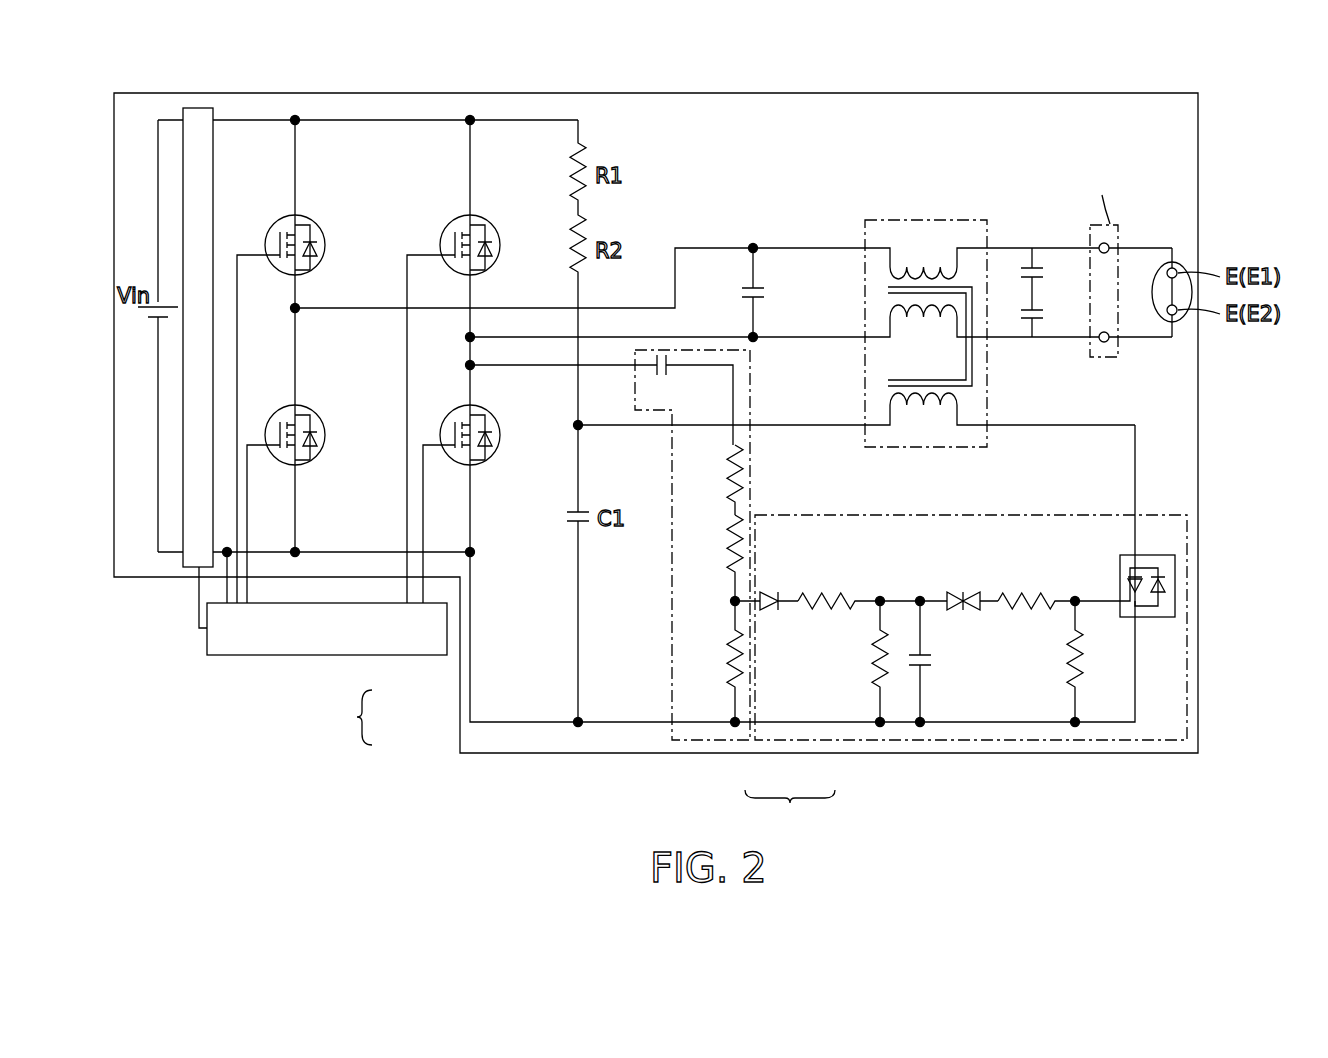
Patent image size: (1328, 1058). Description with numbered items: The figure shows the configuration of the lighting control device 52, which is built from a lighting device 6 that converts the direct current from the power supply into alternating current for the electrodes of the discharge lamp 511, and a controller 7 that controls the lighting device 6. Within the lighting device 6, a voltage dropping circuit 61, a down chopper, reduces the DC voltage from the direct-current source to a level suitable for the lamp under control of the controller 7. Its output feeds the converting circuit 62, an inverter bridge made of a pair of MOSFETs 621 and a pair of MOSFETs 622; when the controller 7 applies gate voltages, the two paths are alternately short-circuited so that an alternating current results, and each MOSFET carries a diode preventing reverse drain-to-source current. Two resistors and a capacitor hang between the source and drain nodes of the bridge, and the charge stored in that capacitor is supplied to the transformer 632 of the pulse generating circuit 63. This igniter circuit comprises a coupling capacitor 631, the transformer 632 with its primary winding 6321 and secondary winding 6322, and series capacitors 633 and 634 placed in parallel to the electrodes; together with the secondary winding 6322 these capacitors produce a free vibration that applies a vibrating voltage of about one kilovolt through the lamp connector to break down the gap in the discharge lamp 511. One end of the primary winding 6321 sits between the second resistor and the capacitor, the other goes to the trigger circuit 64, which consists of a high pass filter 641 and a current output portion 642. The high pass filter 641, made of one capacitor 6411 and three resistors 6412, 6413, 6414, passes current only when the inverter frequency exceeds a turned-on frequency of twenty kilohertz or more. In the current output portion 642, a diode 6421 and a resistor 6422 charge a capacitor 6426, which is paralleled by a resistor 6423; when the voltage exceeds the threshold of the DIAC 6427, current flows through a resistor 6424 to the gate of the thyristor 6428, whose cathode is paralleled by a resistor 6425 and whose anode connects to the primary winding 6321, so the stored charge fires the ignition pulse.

The lighting device 6 is at (460, 740).
The controller 7 is at (392, 656).
The lighting control device 52 is at (350, 717).
The voltage dropping circuit 61 is at (197, 108).
The converting circuit 62 is at (391, 326).
The MOSFETs 621 is at (494, 216).
The MOSFETs 622 is at (320, 216).
The pulse generating circuit 63 is at (821, 275).
The capacitor 631 is at (774, 292).
The igniter transformer 632 is at (821, 308).
The primary winding 6321 is at (976, 404).
The secondary winding 6322 is at (966, 240).
The capacitor 633 is at (1041, 261).
The capacitor 634 is at (1041, 327).
The trigger circuit 64 is at (830, 588).
The high pass filter 641 is at (627, 569).
The capacitor 6411 is at (665, 392).
The resistor 6412 is at (724, 478).
The resistor 6413 is at (724, 548).
The resistor 6414 is at (724, 655).
The current output portion 642 is at (963, 651).
The diode 6421 is at (774, 590).
The resistor 6422 is at (837, 590).
The resistor 6423 is at (864, 656).
The resistor 6424 is at (1039, 590).
The resistor 6425 is at (1060, 656).
The capacitor 6426 is at (936, 670).
The DIAC 6427 is at (967, 590).
The thyristor 6428 is at (1153, 622).
The discharge lamp 511 is at (1160, 322).